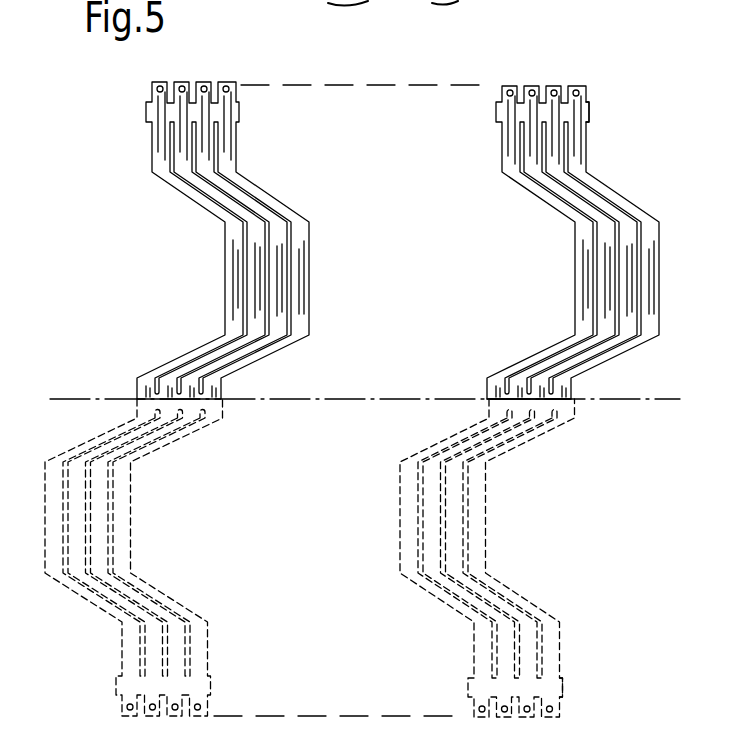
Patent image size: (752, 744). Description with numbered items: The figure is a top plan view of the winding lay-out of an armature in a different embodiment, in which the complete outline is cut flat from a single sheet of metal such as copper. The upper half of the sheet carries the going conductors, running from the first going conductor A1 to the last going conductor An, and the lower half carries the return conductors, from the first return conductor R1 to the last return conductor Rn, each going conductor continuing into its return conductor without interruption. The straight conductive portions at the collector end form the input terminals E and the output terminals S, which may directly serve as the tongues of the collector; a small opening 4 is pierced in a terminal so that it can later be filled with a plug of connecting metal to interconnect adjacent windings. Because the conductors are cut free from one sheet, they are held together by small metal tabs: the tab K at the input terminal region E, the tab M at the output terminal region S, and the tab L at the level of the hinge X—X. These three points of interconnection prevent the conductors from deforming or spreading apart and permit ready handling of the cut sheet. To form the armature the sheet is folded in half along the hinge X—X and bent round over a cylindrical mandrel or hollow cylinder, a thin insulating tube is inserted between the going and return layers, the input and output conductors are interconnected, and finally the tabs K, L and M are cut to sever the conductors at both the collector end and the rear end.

The input terminal E is at (204, 85).
The opening 4 is at (511, 90).
The metal tab K is at (594, 118).
The last going conductor An is at (232, 257).
The first going conductor A1 is at (661, 257).
The hinge X is at (365, 388).
The metal tab L is at (579, 396).
The last return conductor Rn is at (58, 476).
The first return conductor R1 is at (480, 507).
The metal tab M is at (567, 687).
The output terminal S is at (119, 719).